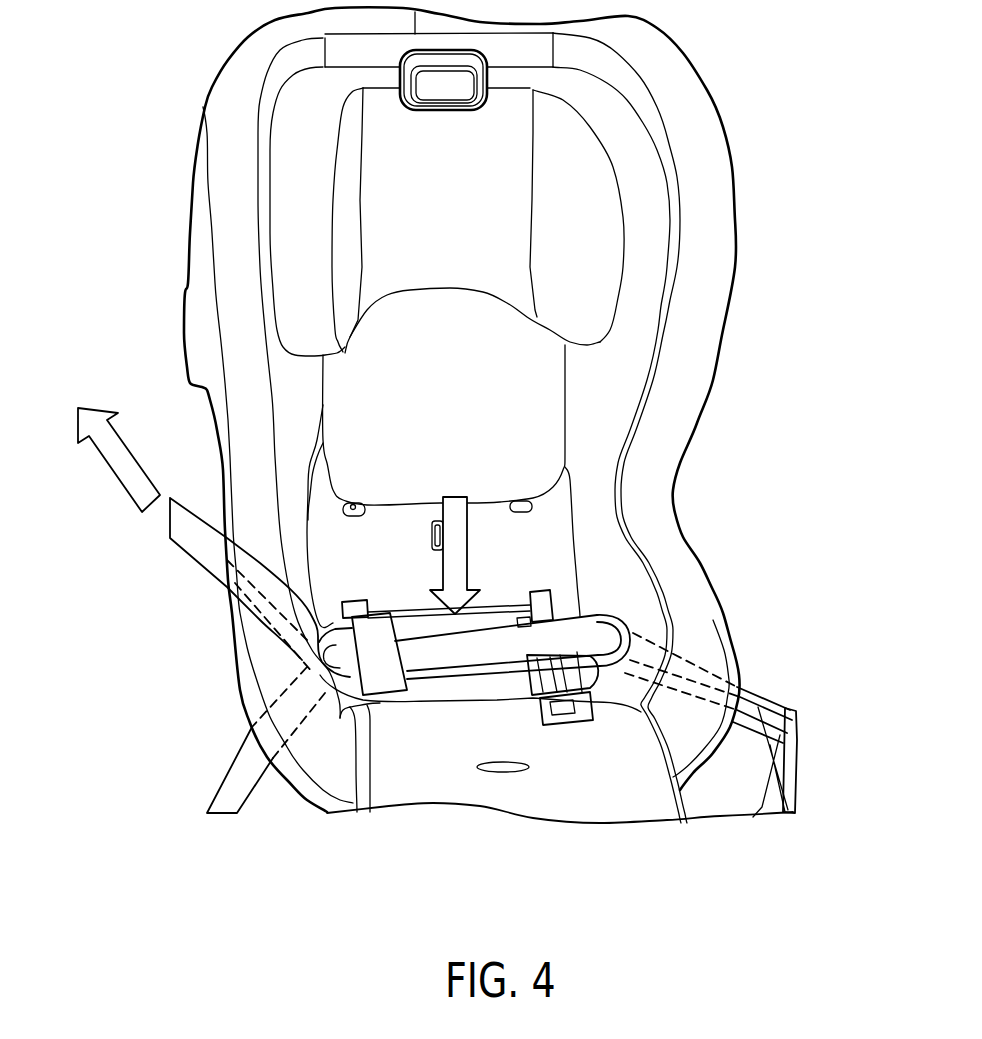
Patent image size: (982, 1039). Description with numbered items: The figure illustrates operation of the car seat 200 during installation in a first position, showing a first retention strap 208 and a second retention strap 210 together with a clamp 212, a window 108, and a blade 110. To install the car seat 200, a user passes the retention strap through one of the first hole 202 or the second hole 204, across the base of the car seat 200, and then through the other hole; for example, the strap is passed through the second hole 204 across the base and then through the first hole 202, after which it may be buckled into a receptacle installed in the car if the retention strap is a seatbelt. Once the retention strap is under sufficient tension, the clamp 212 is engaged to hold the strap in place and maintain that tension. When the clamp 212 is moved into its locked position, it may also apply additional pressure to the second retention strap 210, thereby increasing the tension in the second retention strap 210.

The car seat 200 is at (757, 290).
The second hole 204 is at (192, 496).
The second retention strap 210 is at (188, 537).
The first hole 202 is at (620, 616).
The clamp 212 is at (375, 682).
The blade 110 is at (553, 603).
The window 108 is at (563, 708).
The first retention strap 208 is at (788, 813).